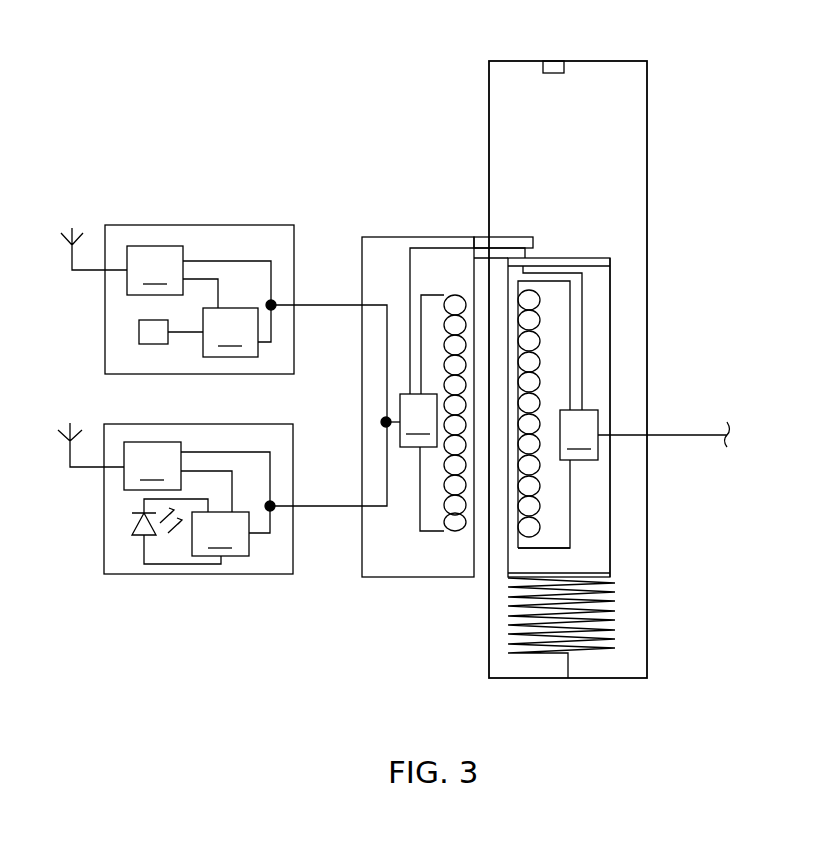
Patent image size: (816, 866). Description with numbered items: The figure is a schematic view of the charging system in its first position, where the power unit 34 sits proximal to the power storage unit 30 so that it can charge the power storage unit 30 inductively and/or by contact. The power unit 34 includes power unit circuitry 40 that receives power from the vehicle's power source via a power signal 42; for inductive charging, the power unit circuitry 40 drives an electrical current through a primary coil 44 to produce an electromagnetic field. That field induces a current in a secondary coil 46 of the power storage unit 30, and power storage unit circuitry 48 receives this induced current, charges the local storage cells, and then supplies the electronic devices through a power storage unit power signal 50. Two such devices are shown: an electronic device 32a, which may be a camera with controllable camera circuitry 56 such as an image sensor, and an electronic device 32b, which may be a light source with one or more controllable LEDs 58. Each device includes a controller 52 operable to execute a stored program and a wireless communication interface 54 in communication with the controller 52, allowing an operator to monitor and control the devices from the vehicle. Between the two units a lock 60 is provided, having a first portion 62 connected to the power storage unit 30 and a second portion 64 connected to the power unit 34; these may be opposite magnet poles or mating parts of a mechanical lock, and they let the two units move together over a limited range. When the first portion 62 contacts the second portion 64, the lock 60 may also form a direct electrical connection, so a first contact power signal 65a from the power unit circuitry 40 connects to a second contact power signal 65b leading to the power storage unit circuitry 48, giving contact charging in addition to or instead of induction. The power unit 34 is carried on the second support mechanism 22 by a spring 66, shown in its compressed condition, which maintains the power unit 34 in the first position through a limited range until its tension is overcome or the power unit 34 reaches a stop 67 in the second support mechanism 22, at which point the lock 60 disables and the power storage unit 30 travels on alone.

The second support mechanism 22 is at (623, 678).
The stop 67 is at (552, 61).
The electronic device 32a is at (238, 225).
The electronic device 32b is at (215, 575).
The wireless communication interface 54 is at (153, 368).
The controller 52 is at (225, 432).
The controllable camera circuitry 56 is at (158, 345).
The controllable LED 58 is at (136, 546).
The power storage unit power signal 50 is at (318, 305).
The power storage unit 30 is at (372, 578).
The second contact power signal 65b is at (443, 248).
The power storage unit circuitry 48 is at (409, 420).
The secondary coil 46 is at (443, 531).
The first portion 62 is at (517, 238).
The lock 60 is at (538, 218).
The second portion 64 is at (580, 258).
The power unit 34 is at (611, 345).
The first contact power signal 65a is at (582, 300).
The primary coil 44 is at (555, 550).
The power unit circuitry 40 is at (579, 435).
The power signal 42 is at (697, 435).
The spring 66 is at (628, 638).